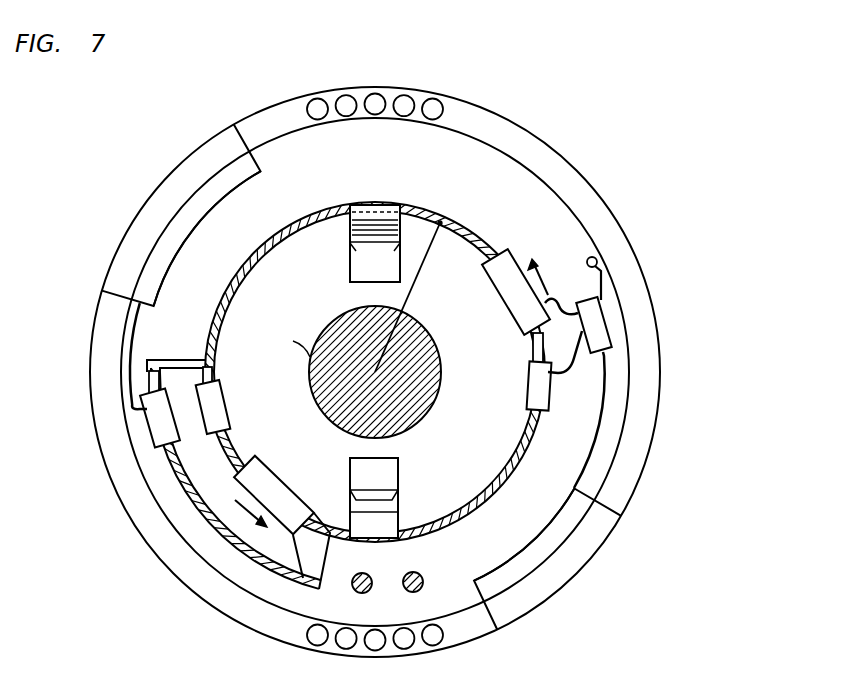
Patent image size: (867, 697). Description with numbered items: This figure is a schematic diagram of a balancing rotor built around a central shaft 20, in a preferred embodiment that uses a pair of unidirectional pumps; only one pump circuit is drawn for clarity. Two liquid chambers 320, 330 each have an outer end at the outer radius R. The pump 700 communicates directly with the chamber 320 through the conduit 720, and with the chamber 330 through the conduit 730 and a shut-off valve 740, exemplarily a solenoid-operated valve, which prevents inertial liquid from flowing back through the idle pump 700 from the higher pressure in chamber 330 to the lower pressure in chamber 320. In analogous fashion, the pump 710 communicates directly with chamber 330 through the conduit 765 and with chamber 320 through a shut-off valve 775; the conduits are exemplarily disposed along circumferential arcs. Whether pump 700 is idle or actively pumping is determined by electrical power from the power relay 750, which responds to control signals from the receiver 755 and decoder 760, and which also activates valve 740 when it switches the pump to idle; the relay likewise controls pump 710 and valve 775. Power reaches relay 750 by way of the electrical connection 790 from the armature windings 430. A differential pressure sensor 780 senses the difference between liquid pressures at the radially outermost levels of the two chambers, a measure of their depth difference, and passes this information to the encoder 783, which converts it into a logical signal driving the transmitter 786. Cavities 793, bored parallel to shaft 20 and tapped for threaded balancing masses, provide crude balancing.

The shaft 20 is at (336, 318).
The chamber 320 is at (378, 204).
The chamber 330 is at (386, 458).
The armature windings 430 is at (428, 97).
The pump 700 is at (507, 314).
The pump 710 is at (281, 474).
The conduit 720 is at (468, 226).
The conduit 730 is at (494, 490).
The shut-off valve 740 is at (528, 380).
The power relay 750 is at (610, 331).
The receiver 755 is at (567, 582).
The decoder 760 is at (505, 556).
The conduit 765 is at (327, 540).
The shut-off valve 775 is at (228, 400).
The differential pressure sensor 780 is at (156, 439).
The encoder 783 is at (224, 202).
The transmitter 786 is at (125, 242).
The electrical connection 790 is at (596, 259).
The cavities 793 is at (370, 591).